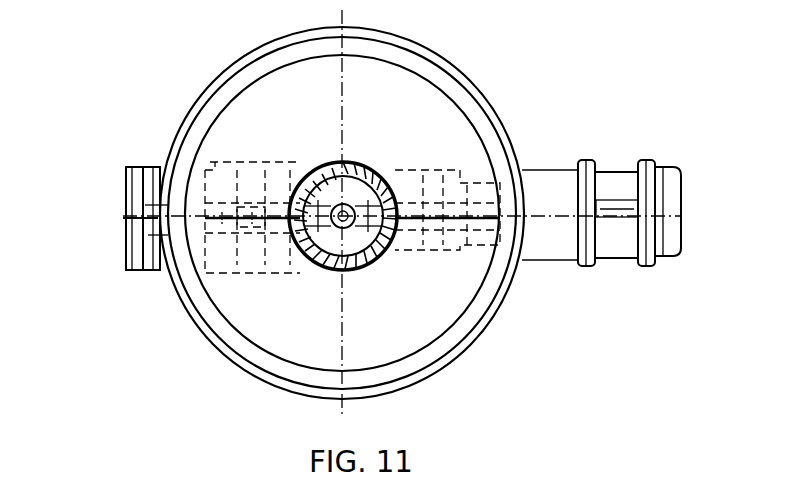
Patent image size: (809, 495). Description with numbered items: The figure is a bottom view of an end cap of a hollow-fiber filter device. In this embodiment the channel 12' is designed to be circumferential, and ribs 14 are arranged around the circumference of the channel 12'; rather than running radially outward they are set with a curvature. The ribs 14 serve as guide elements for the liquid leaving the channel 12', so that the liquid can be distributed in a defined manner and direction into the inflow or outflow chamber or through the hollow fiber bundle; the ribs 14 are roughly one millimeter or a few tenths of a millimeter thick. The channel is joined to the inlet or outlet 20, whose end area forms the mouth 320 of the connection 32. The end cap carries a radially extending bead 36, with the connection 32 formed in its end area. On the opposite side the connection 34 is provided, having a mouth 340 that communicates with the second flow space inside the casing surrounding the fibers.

The mouth 320 is at (127, 215).
The connection 32 is at (134, 275).
The ribs 14 is at (330, 163).
The channel 12' is at (312, 184).
The inlet or outlet 20 is at (252, 242).
The bead 36 is at (430, 251).
The connection 34 is at (612, 170).
The mouth 340 is at (681, 189).